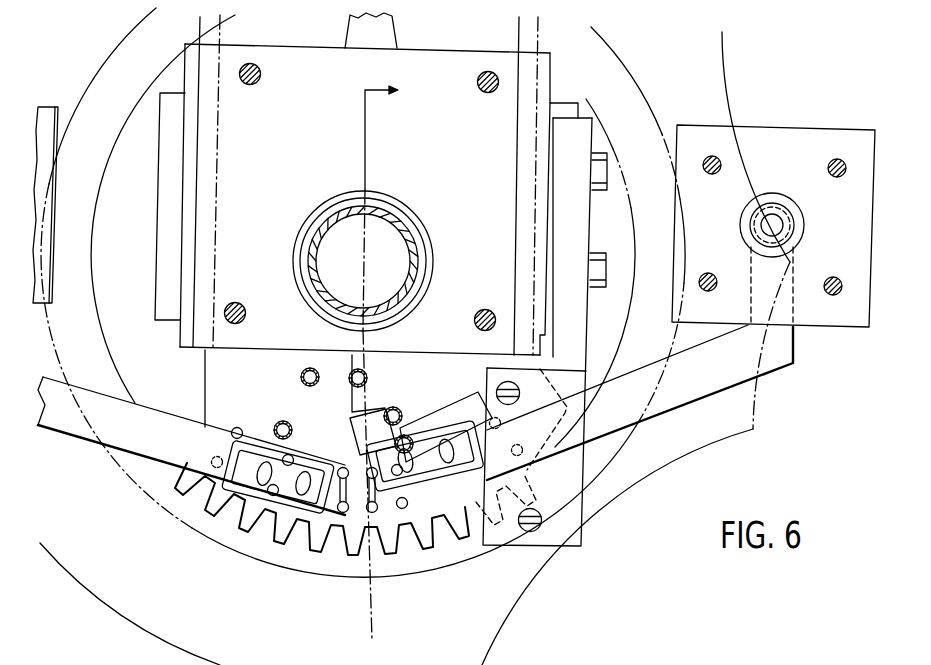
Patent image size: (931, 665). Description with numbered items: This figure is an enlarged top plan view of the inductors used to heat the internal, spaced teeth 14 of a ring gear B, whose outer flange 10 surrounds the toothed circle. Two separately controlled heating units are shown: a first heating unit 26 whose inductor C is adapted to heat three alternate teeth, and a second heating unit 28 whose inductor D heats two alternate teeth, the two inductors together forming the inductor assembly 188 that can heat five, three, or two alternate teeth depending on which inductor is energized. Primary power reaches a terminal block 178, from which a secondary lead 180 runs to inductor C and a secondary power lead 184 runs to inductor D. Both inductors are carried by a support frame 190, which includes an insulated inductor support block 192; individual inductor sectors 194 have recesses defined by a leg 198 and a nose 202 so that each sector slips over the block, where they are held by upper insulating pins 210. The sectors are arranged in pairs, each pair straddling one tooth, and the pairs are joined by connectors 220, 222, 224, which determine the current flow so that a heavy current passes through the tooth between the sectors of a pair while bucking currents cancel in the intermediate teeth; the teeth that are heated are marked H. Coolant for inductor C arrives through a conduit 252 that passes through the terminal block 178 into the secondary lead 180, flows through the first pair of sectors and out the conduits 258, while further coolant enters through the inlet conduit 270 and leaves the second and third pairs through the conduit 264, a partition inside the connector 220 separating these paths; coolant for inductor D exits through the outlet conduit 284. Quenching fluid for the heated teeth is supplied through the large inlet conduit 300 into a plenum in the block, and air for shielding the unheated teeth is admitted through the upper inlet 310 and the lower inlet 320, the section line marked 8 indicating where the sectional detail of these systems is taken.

The outer flange 10 is at (88, 117).
The ring gear B is at (114, 88).
The support frame 190 is at (465, 65).
The section line 8 is at (392, 359).
The inlet conduit 300 is at (403, 230).
The first heating unit 26 is at (773, 201).
The terminal block 178 is at (757, 138).
The secondary lead 180 is at (660, 415).
The inductor assembly 188 is at (488, 565).
The second heating unit 28 is at (65, 440).
The secondary power lead 184 is at (122, 452).
The teeth 14 is at (298, 565).
The heated teeth H is at (369, 531).
The inductor C is at (453, 543).
The inductor D is at (265, 548).
The inductor support block 192 is at (213, 380).
The upper insulating pins 210 is at (240, 423).
The inductor sectors 194 is at (243, 523).
The leg 198 is at (336, 532).
The nose 202 is at (316, 547).
The conduits 258 is at (437, 397).
The conduit 264 is at (457, 397).
The inlet 320 is at (300, 368).
The upper inlet 310 is at (352, 366).
The inlet conduit 270 is at (366, 380).
The outlet conduit 284 is at (278, 418).
The connector 222 is at (400, 406).
The connector 224 is at (300, 427).
The connector 220 is at (412, 435).
The conduit 252 is at (788, 655).